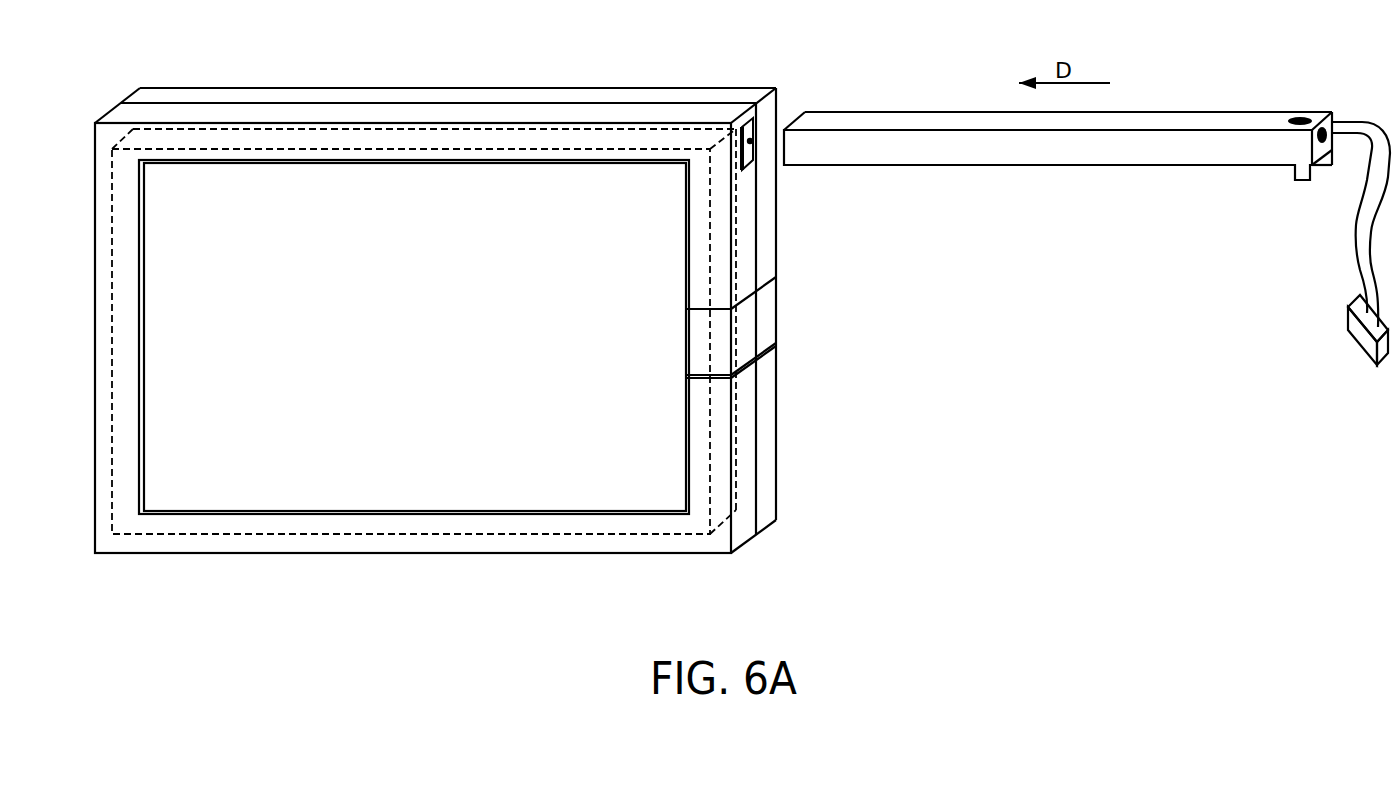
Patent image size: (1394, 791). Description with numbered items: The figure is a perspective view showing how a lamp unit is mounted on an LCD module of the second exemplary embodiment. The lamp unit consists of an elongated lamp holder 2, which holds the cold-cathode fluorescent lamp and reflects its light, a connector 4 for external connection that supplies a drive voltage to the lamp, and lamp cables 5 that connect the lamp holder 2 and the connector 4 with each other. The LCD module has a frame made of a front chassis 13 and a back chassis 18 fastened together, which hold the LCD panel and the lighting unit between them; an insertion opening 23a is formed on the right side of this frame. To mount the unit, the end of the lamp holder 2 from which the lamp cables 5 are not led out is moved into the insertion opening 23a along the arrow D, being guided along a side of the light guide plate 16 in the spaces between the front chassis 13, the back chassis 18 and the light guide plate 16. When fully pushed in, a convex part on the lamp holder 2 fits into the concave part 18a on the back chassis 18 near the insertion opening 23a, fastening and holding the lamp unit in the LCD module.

The lamp holder 2 is at (1242, 125).
The connector 4 is at (1350, 322).
The lamp cables 5 is at (1357, 220).
The front chassis 13 is at (748, 458).
The light guide plate 16 is at (680, 525).
The back chassis 18 is at (770, 252).
The concave part 18a is at (752, 143).
The insertion opening 23a is at (748, 125).